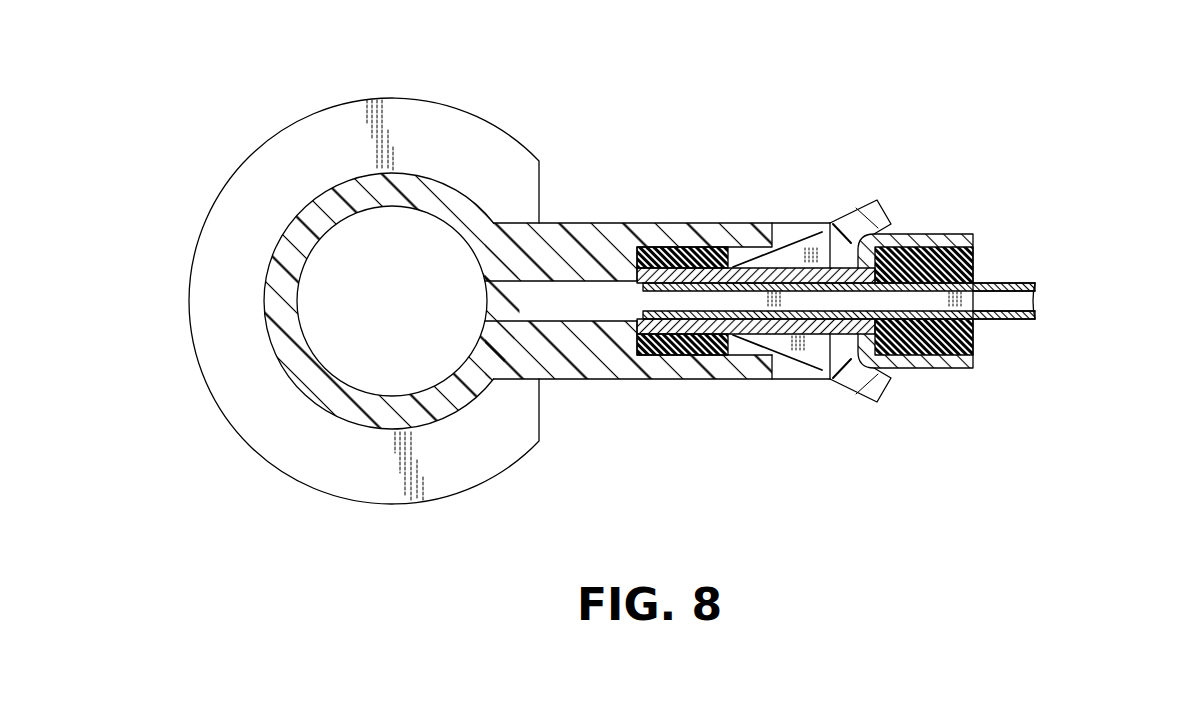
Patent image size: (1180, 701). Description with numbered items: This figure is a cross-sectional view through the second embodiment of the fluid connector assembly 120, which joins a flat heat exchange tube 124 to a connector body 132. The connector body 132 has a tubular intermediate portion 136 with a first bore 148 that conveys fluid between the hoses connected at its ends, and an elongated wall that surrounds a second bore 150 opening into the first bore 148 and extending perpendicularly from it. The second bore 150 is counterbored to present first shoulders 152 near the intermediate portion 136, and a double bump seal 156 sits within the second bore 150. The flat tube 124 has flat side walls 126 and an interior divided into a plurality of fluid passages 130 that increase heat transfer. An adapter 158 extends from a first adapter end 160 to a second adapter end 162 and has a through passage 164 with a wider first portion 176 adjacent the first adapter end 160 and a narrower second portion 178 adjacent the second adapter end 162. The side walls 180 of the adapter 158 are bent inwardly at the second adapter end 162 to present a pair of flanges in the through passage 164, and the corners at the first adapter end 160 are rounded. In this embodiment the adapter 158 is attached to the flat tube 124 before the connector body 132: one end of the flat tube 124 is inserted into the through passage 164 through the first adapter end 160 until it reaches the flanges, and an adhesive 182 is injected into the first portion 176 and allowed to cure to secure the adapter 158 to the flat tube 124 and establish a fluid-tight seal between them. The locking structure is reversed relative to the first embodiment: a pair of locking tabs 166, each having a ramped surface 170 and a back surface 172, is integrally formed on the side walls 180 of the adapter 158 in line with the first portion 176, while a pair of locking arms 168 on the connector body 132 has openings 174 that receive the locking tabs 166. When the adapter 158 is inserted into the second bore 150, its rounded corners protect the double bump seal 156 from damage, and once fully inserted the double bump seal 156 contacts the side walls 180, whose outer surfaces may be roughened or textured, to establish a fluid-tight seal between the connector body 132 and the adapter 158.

The fluid connector assembly 120 is at (528, 93).
The flat tube 124 is at (1027, 276).
The side walls 126 is at (994, 282).
The fluid passages 130 is at (1020, 302).
The connector body 132 is at (242, 441).
The intermediate portion 136 is at (345, 408).
The first bore 148 is at (411, 313).
The second bore 150 is at (532, 302).
The first shoulders 152 is at (651, 240).
The double bump seal 156 is at (706, 270).
The adapter 158 is at (961, 226).
The first adapter end 160 is at (628, 327).
The second adapter end 162 is at (975, 235).
The through passage 164 is at (898, 234).
The locking tabs 166 is at (826, 233).
The locking arms 168 is at (887, 392).
The ramped surfaces 170 is at (805, 353).
The back surfaces 172 is at (832, 350).
The openings 174 is at (792, 365).
The first portion 176 is at (728, 293).
The second portion 178 is at (947, 352).
The side walls 180 is at (697, 256).
The adhesive 182 is at (935, 234).